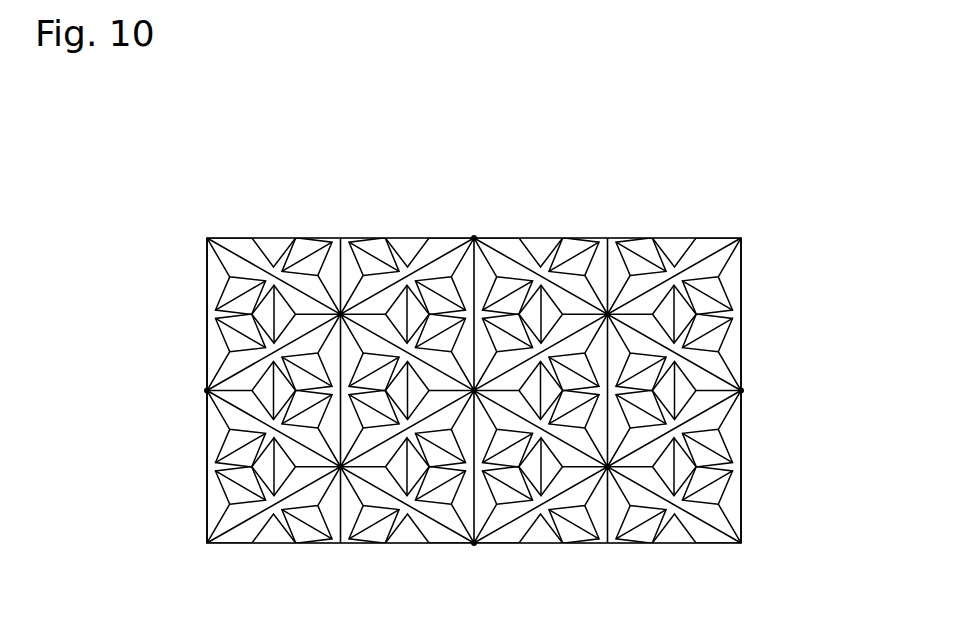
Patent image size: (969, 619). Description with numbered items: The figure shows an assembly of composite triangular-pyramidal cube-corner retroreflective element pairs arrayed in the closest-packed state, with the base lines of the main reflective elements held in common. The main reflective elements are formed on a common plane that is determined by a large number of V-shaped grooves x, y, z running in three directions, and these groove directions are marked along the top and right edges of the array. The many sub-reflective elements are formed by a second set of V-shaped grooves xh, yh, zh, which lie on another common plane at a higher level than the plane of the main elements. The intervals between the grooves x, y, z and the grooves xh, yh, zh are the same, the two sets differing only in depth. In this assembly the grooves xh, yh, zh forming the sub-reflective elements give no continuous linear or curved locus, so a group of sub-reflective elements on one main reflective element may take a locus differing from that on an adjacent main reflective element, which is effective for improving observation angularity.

The V-shaped groove x is at (741, 232).
The V-shaped groove xh is at (674, 232).
The V-shaped groove y is at (797, 510).
The V-shaped groove z is at (797, 576).
The V-shaped groove yh is at (771, 448).
The V-shaped groove zh is at (771, 485).